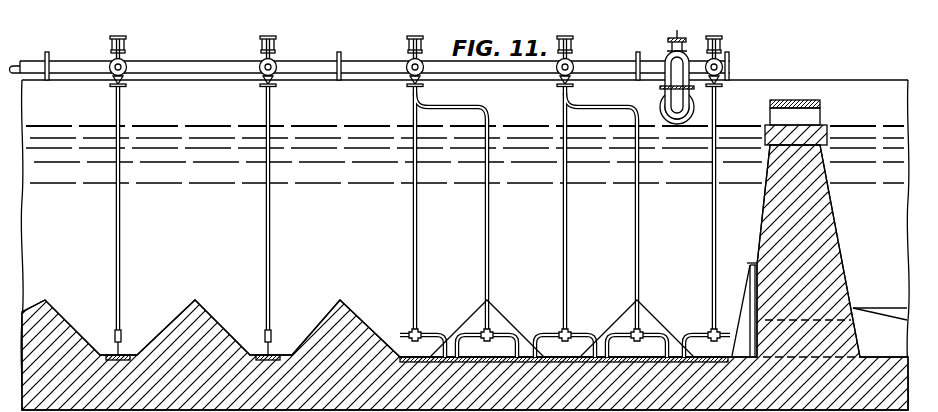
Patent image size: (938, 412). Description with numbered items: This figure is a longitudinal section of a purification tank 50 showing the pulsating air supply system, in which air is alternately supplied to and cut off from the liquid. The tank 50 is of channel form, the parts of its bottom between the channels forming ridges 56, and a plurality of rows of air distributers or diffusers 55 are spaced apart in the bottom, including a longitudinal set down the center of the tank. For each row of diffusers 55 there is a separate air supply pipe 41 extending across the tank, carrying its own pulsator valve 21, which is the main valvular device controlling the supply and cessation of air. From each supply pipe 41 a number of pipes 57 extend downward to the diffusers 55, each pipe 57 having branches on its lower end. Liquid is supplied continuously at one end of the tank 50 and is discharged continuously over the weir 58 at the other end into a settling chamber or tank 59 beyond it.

The pulsator valve 21 is at (110, 40).
The air supply pipe 41 is at (148, 68).
The tank 50 is at (465, 245).
The air distributers or diffusers 55 is at (262, 352).
The ridges 56 is at (193, 336).
The pipes 57 is at (121, 241).
The weir 58 is at (815, 122).
The settling chamber or tank 59 is at (874, 233).